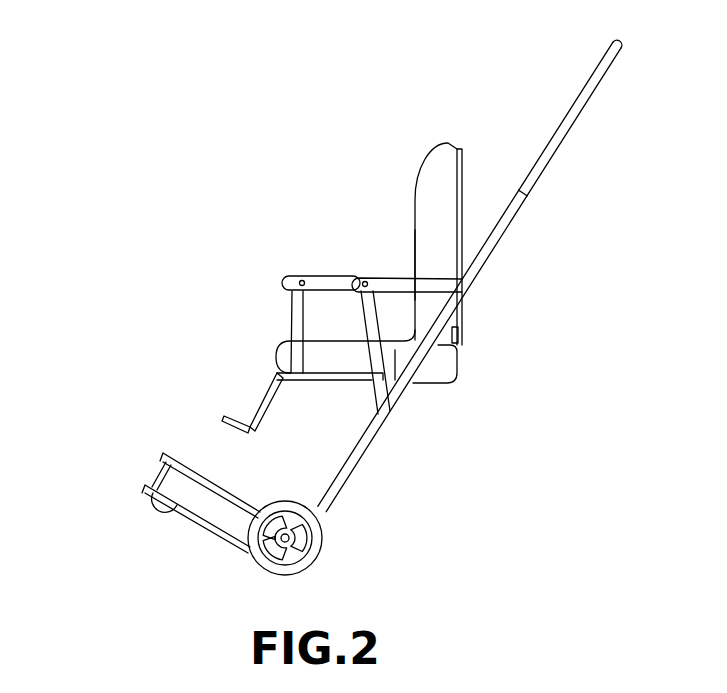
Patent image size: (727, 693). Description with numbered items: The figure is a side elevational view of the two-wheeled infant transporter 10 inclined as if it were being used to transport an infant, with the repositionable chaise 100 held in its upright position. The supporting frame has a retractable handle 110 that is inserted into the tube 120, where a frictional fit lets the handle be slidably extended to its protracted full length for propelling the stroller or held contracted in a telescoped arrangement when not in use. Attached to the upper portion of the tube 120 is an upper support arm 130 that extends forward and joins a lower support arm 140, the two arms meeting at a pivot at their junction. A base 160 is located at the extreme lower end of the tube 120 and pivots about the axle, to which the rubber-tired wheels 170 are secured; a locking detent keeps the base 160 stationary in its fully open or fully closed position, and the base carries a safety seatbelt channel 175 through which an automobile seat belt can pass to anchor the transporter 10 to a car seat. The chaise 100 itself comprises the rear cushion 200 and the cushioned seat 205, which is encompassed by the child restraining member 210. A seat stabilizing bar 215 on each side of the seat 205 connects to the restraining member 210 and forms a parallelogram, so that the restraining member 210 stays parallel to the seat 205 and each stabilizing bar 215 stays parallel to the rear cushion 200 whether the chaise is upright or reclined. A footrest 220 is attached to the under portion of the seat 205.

The two-wheeled infant transporter 10 is at (220, 134).
The foldable juvenile chaise 100 is at (423, 167).
The retractable handle 110 is at (566, 139).
The tube 120 is at (373, 458).
The upper support arm 130 is at (420, 283).
The lower support arm 140 is at (383, 362).
The base 160 is at (145, 484).
The rubber-tired wheel 170 is at (324, 554).
The safety seatbelt channel 175 is at (173, 481).
The rear cushion 200 is at (413, 228).
The cushioned seat 205 is at (337, 362).
The child restraining member 210 is at (318, 277).
The seat stabilizing bar 215 is at (300, 314).
The footrest 220 is at (222, 418).